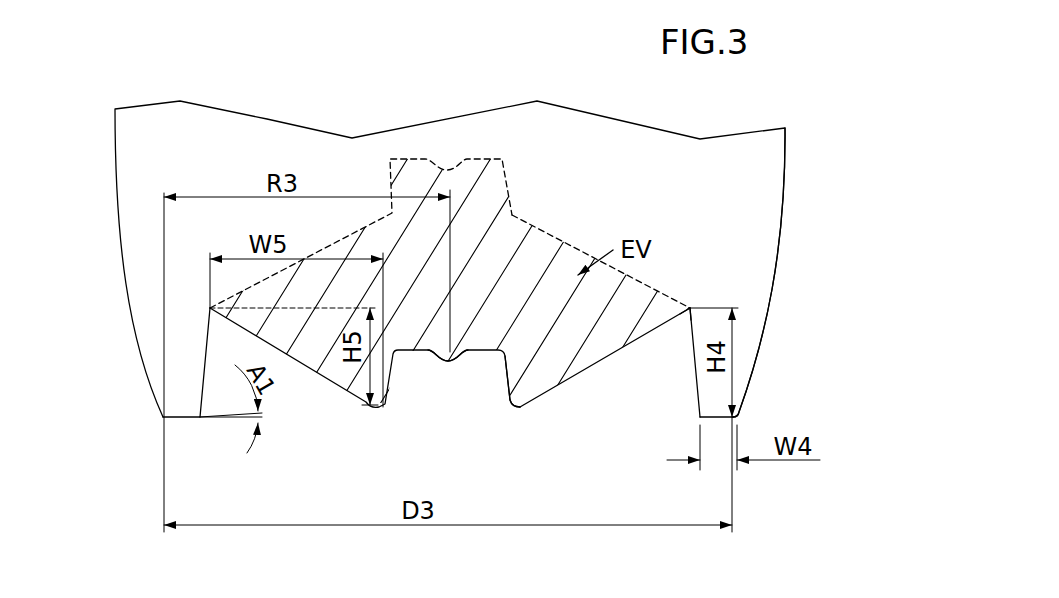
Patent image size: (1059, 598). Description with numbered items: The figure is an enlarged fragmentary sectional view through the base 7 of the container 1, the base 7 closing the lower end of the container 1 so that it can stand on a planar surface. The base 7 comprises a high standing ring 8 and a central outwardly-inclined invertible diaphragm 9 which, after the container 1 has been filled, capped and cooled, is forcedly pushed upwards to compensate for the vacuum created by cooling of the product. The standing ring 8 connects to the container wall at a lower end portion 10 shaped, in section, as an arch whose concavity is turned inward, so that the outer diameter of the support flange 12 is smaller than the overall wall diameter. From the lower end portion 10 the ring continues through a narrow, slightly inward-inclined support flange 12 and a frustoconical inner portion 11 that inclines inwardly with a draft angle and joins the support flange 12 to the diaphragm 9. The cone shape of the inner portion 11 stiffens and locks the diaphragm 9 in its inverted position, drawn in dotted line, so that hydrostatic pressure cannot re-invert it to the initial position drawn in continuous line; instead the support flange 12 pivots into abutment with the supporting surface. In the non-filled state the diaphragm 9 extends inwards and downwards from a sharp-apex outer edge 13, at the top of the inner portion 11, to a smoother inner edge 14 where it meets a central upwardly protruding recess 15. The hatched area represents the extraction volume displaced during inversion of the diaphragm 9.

The container 1 is at (788, 160).
The base 7 is at (553, 434).
The standing ring 8 is at (162, 421).
The invertible diaphragm 9 is at (563, 240).
The lower end portion 10 is at (760, 350).
The inner portion 11 is at (695, 360).
The support flange 12 is at (722, 416).
The outer edge 13 is at (692, 298).
The inner edge 14 is at (533, 383).
The central upwardly protruding recess 15 is at (508, 187).